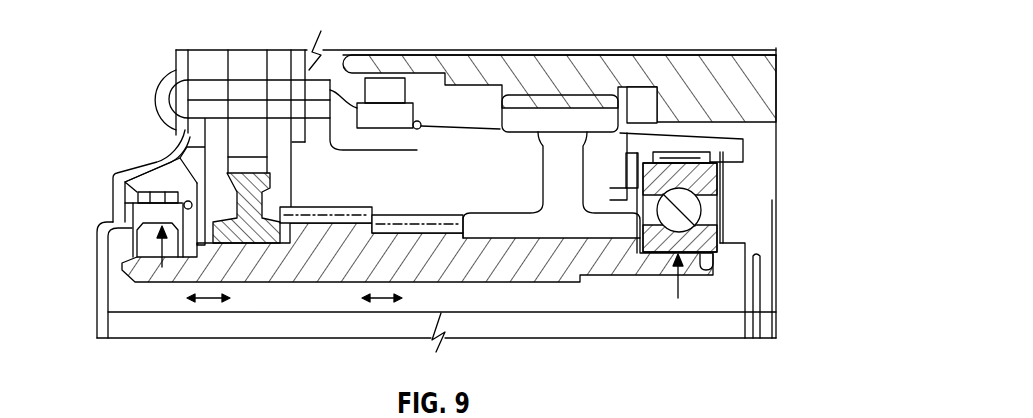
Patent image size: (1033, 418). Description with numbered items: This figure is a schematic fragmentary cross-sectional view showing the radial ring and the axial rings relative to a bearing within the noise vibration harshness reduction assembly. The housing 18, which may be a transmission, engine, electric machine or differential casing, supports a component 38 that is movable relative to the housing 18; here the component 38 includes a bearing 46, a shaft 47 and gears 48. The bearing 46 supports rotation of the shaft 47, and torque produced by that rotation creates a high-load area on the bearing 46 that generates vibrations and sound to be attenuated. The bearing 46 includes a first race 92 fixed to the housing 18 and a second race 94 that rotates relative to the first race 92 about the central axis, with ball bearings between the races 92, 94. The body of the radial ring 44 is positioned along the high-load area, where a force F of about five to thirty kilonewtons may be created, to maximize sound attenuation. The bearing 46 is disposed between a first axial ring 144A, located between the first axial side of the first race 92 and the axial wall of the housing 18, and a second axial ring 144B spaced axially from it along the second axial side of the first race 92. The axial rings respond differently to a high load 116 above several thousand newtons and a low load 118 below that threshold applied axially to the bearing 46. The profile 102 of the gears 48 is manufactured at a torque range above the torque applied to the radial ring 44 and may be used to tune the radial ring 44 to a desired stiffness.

The housing 18 is at (97, 292).
The component 38 is at (455, 130).
The radial ring 44 is at (160, 197).
The bearing 46 is at (132, 256).
The shaft 47 is at (703, 266).
The gear 48 is at (362, 208).
The first race 92 is at (720, 190).
The second race 94 is at (720, 247).
The profile 102 is at (388, 214).
The high load 116 is at (207, 302).
The low load 118 is at (380, 302).
The first axial ring 144A is at (637, 237).
The second axial ring 144B is at (723, 222).
The force F is at (160, 250).